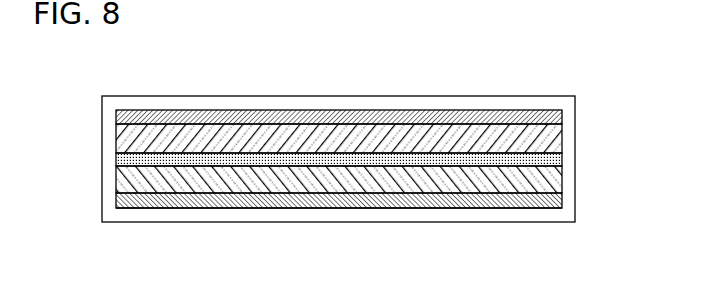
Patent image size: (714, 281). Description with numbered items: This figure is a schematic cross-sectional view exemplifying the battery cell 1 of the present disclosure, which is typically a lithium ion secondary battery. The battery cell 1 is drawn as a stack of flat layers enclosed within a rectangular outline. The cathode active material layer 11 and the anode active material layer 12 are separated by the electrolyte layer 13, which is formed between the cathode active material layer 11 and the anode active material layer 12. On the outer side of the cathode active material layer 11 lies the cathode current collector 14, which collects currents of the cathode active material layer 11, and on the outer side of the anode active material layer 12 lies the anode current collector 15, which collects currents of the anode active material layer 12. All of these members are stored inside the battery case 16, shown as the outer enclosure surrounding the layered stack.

The battery cell 1 is at (552, 76).
The cathode active material layer 11 is at (550, 130).
The anode active material layer 12 is at (547, 178).
The electrolyte layer 13 is at (548, 160).
The cathode current collector 14 is at (560, 112).
The anode current collector 15 is at (553, 202).
The battery case 16 is at (548, 215).